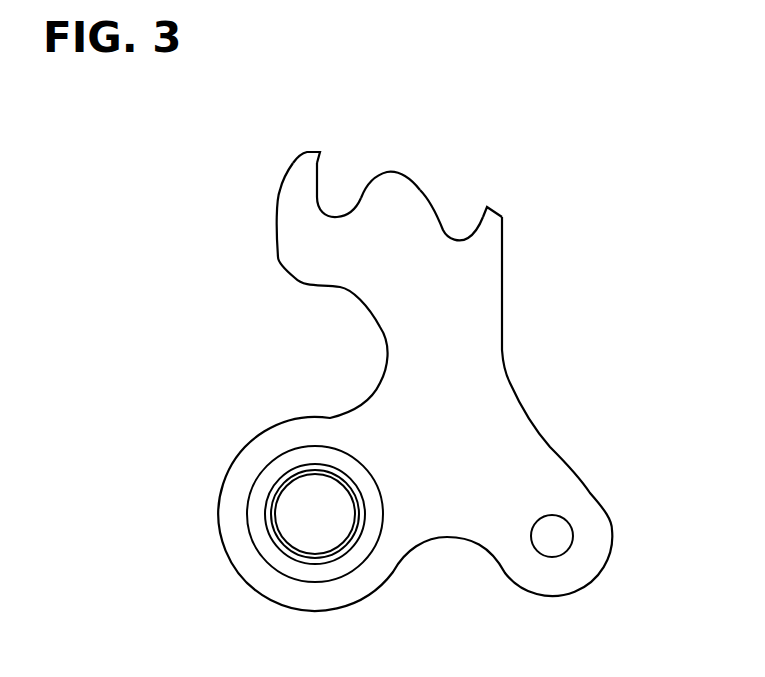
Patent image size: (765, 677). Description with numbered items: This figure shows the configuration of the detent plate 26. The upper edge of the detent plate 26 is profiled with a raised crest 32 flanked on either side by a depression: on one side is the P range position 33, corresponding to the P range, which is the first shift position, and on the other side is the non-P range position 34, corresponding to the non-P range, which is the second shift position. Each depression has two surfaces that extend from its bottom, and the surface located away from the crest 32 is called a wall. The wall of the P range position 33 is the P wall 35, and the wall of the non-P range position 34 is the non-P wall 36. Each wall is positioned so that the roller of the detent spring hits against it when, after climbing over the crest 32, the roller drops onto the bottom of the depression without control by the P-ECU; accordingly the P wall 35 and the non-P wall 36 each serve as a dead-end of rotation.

The detent plate 26 is at (510, 383).
The crest 32 is at (387, 172).
The P range position 33 is at (335, 198).
The non-P range position 34 is at (457, 220).
The P wall 35 is at (322, 158).
The non-P wall 36 is at (483, 210).